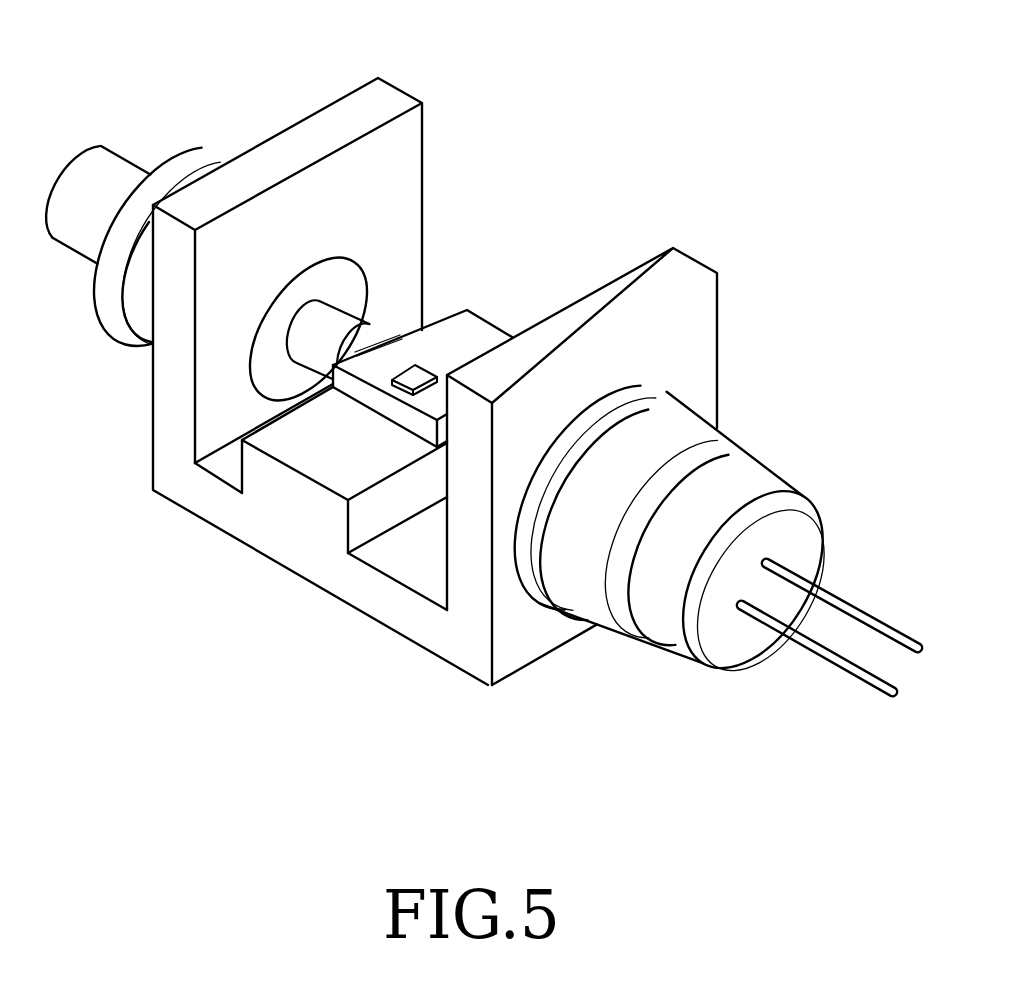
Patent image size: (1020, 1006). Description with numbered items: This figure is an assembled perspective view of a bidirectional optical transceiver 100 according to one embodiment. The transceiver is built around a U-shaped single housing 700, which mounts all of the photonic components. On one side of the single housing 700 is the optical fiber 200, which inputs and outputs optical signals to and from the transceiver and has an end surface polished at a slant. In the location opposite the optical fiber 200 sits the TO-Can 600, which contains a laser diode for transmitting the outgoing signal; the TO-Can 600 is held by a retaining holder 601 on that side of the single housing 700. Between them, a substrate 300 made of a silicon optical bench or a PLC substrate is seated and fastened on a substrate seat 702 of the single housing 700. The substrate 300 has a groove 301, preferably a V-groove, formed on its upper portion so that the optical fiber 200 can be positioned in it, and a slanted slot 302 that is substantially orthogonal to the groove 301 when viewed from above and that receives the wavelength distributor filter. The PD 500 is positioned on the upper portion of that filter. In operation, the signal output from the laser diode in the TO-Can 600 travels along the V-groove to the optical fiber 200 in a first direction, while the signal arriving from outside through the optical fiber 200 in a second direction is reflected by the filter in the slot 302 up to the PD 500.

The bidirectional optical transceiver 100 is at (675, 68).
The optical fiber 200 is at (368, 343).
The substrate 300 is at (438, 351).
The groove 301 is at (437, 390).
The slot 302 is at (385, 398).
The PD 500 is at (503, 333).
The TO-Can 600 is at (750, 457).
The retaining holder 601 is at (672, 393).
The single housing 700 is at (143, 426).
The substrate seat 702 is at (262, 494).